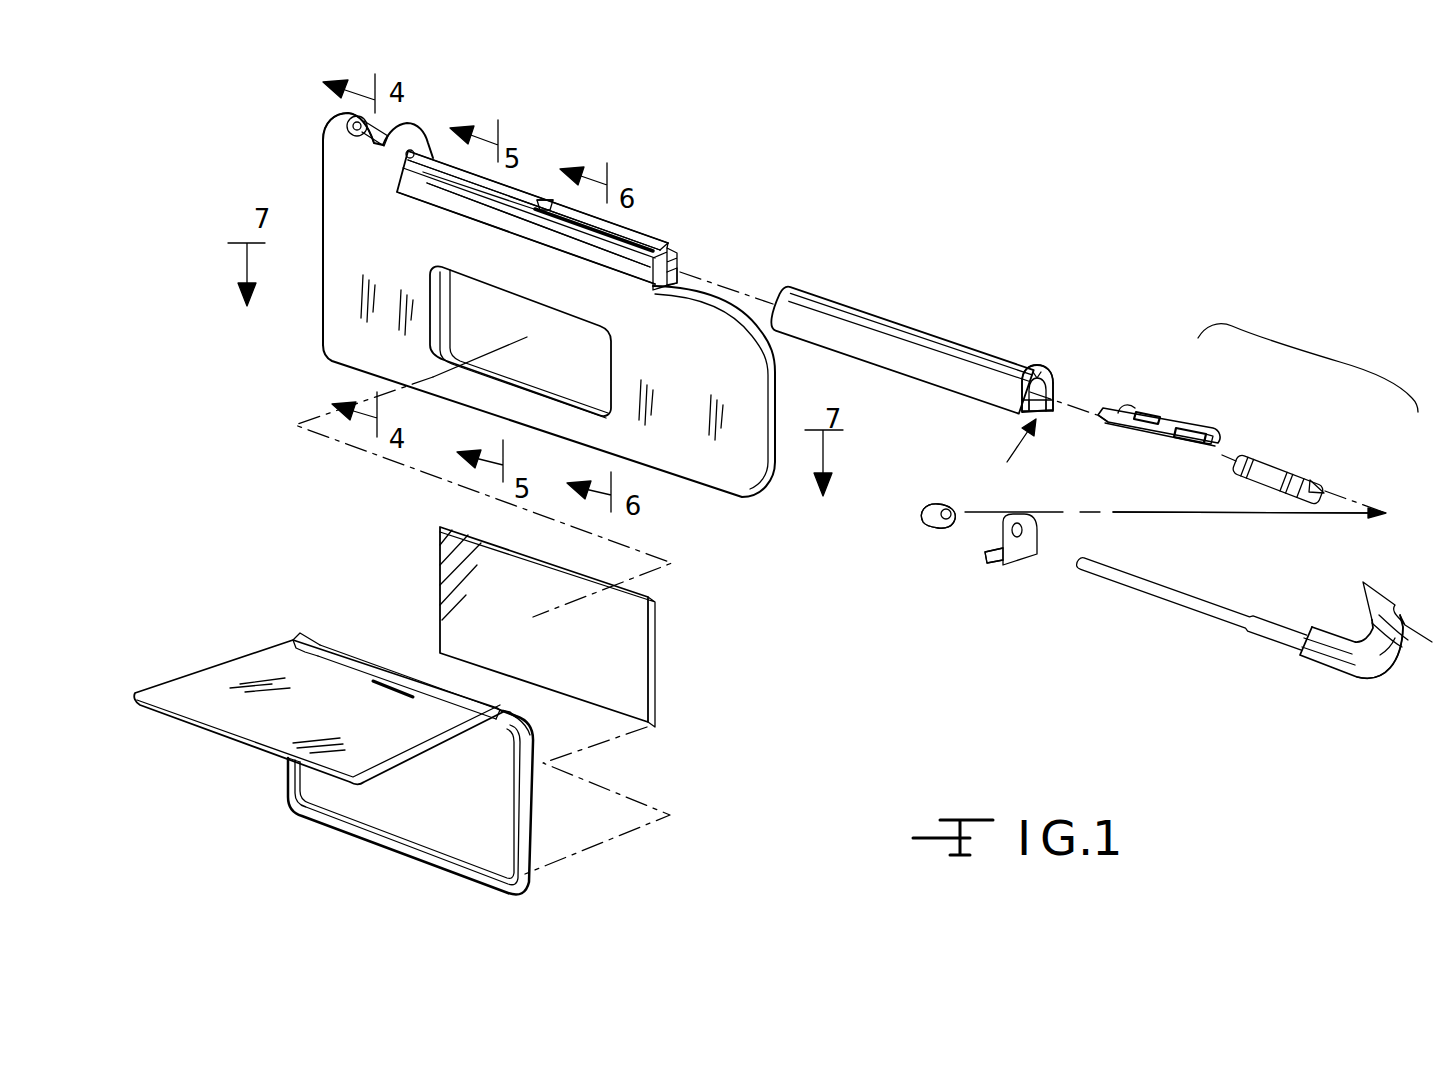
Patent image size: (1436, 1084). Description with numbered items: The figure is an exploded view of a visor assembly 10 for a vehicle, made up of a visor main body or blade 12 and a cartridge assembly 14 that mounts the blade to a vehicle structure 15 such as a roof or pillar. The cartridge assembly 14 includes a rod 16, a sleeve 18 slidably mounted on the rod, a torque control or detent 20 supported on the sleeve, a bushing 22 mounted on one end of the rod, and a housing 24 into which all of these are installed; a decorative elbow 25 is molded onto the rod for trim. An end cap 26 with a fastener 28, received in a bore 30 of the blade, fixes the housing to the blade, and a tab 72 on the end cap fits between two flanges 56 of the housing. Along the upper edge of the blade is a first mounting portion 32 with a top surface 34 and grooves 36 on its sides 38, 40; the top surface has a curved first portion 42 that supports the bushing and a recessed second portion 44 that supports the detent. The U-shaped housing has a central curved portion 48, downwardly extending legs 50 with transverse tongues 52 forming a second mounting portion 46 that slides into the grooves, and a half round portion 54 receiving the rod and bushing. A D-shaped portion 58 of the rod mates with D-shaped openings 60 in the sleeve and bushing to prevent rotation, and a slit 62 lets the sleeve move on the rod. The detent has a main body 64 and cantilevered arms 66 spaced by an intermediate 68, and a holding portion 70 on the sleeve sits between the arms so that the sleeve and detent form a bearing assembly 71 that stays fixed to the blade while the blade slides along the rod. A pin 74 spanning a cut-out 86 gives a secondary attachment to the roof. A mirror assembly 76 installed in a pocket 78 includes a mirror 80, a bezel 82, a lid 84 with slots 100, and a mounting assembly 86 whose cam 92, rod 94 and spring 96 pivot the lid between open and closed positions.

The visor assembly 10 is at (789, 158).
The visor main body or blade 12 is at (741, 483).
The cartridge assembly 14 is at (1160, 203).
The vehicle structure 15 is at (1377, 583).
The rod 16 is at (1328, 630).
The sleeve 18 is at (1297, 484).
The torque control or detent 20 is at (1153, 437).
The bushing 22 is at (940, 500).
The housing 24 is at (887, 327).
The decorative elbow 25 is at (1345, 662).
The end cap 26 is at (1040, 515).
The fastener 28 is at (993, 562).
The bore 30 is at (668, 300).
The first mounting portion 32 is at (682, 250).
The top surface 34 is at (548, 198).
The channels or grooves 36 is at (556, 256).
The side 38 is at (628, 280).
The side 40 is at (674, 243).
The first portion 42 is at (420, 182).
The second portion 44 is at (630, 228).
The second mounting portion 46 is at (1008, 459).
The central curved portion 48 is at (1040, 366).
The legs 50 is at (1055, 384).
The tongue 52 is at (1029, 412).
The half round portion 54 is at (1051, 366).
The flanges 56 is at (1022, 384).
The D-shaped portion 58 is at (1160, 592).
The D-shaped openings 60 is at (1320, 482).
The slit 62 is at (1282, 456).
The main body 64 is at (1115, 411).
The cantilevered arms 66 is at (1140, 408).
The intermediate 68 is at (1150, 447).
The holding portion 70 is at (1250, 482).
The bearing assembly 71 is at (1308, 364).
The tab 72 is at (1000, 518).
The pin 74 is at (350, 128).
The mirror assembly 76 is at (688, 775).
The pocket or depression 78 is at (580, 368).
The mirror 80 is at (645, 635).
The bezel 82 is at (524, 878).
The lid 84 is at (173, 688).
The cut-out 86 is at (363, 115).
The cam 92 is at (396, 684).
The rod 94 is at (453, 702).
The spring 96 is at (378, 687).
The slots 100 is at (293, 633).